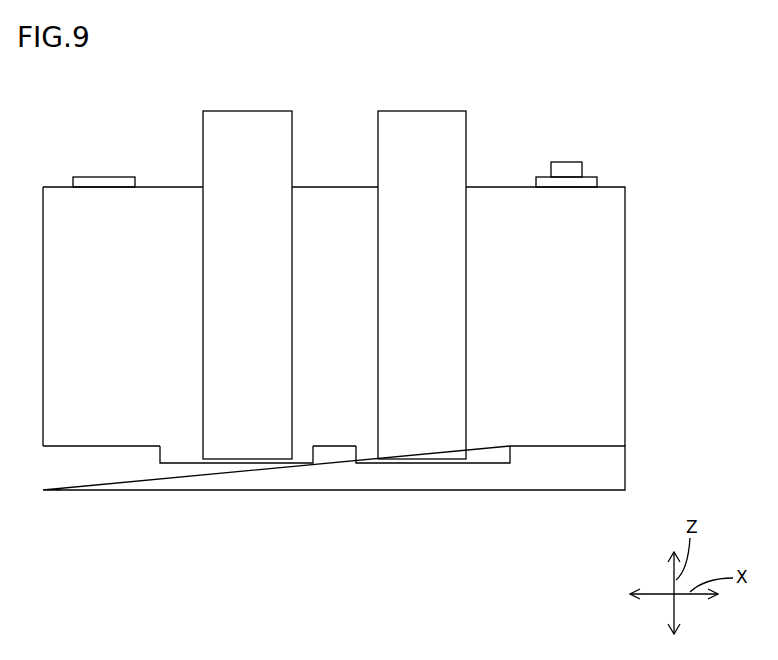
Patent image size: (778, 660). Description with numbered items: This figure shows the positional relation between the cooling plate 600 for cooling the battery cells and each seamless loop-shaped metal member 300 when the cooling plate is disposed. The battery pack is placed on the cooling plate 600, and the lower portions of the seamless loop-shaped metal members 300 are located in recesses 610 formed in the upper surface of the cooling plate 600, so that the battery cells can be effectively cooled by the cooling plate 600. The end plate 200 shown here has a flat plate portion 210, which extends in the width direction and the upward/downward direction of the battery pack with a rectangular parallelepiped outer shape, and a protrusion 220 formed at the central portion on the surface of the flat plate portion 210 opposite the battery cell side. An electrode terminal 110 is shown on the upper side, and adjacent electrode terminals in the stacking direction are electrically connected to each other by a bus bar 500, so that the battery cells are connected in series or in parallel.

The electrode terminal 110 is at (592, 180).
The end plate 200 is at (616, 321).
The flat plate portion 210 is at (499, 185).
The protrusion 220 is at (328, 185).
The seamless loop-shaped metal member 300 is at (250, 120).
The bus bar 500 is at (567, 168).
The cooling plate 600 is at (616, 470).
The recess 610 is at (177, 466).